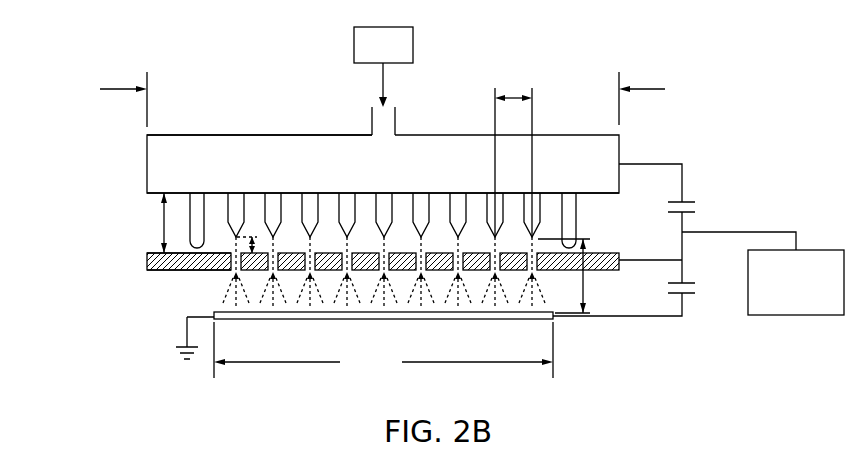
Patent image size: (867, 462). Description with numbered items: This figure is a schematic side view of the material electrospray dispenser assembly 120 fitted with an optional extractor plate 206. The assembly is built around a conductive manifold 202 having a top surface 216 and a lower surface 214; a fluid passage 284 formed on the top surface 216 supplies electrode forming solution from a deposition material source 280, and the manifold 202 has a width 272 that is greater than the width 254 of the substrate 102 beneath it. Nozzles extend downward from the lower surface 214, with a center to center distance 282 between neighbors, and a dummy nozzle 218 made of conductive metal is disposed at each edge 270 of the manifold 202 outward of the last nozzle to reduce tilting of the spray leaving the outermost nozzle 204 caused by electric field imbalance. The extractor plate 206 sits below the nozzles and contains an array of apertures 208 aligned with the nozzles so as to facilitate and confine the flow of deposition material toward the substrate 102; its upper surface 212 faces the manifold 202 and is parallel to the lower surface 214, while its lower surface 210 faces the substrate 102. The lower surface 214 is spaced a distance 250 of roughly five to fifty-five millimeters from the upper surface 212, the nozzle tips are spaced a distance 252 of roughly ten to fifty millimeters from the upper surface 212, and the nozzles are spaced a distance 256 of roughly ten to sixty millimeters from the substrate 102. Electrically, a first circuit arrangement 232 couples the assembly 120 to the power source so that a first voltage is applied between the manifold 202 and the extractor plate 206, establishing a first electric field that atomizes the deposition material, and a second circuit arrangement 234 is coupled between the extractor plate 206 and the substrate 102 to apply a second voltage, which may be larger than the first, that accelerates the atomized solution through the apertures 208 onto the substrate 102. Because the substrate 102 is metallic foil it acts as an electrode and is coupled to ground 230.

The substrate 102 is at (240, 320).
The material electrospray dispenser assembly 120 is at (600, 59).
The manifold 202 is at (370, 169).
The outermost nozzle 204 is at (208, 238).
The extractor plate 206 is at (147, 262).
The apertures 208 is at (232, 270).
The lower surface of extractor plate 210 is at (163, 271).
The upper surface of extractor plate 212 is at (147, 255).
The lower surface of manifold 214 is at (147, 193).
The top surface of manifold 216 is at (270, 135).
The dummy nozzles 218 is at (187, 205).
The ground 230 is at (176, 345).
The first circuit arrangement 232 is at (653, 163).
The second circuit arrangement 234 is at (683, 305).
The distance between manifold lower surface and extractor plate upper surface 250 is at (163, 222).
The distance between nozzle and extractor plate upper surface 252 is at (256, 236).
The width of substrate 254 is at (383, 350).
The distance between nozzle and substrate 256 is at (586, 283).
The edges of manifold 270 is at (813, 250).
The width of dispenser assembly 272 is at (666, 98).
The deposition material source 280 is at (369, 56).
The nozzle center to center distance 282 is at (513, 95).
The fluid passage 284 is at (397, 120).